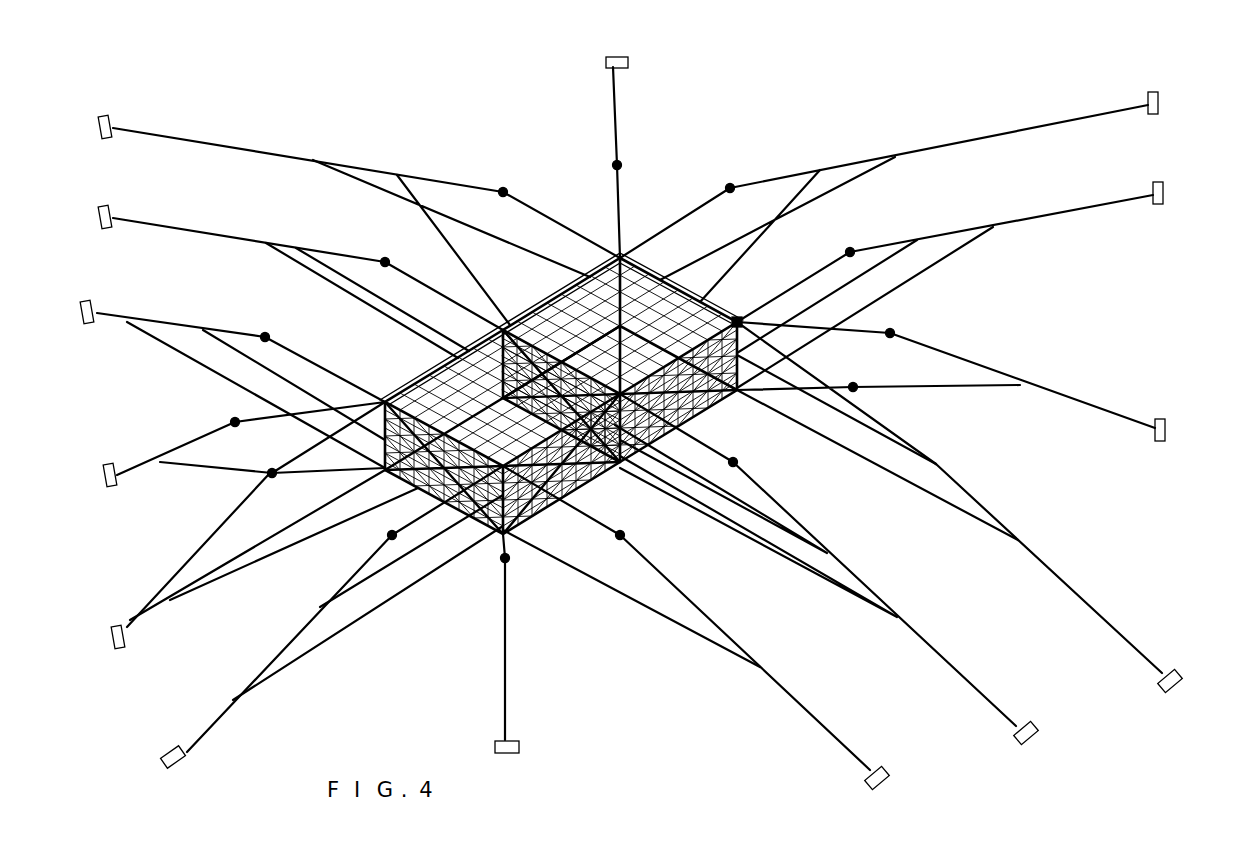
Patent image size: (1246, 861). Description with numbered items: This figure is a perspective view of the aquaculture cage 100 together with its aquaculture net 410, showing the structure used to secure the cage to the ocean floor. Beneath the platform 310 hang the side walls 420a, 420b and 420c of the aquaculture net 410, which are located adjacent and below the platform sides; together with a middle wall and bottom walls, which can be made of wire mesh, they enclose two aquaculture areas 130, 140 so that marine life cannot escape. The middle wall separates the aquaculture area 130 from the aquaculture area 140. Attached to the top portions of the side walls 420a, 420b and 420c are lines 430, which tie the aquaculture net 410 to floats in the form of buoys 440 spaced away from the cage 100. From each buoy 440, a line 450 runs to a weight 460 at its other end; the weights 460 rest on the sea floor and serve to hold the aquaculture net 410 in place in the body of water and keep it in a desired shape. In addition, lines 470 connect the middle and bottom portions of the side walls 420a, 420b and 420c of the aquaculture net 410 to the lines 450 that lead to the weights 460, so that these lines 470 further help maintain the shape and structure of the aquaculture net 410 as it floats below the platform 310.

The aquaculture cage 100 is at (708, 78).
The aquaculture area 130 is at (432, 400).
The aquaculture area 140 is at (692, 312).
The platform 310 is at (600, 282).
The aquaculture net 410 is at (740, 312).
The side wall 420a is at (540, 312).
The side wall 420b is at (430, 488).
The side wall 420c is at (582, 482).
The lines 430 is at (560, 222).
The buoys 440 is at (501, 188).
The lines 450 is at (258, 150).
The weights 460 is at (103, 116).
The lines 470 is at (400, 198).